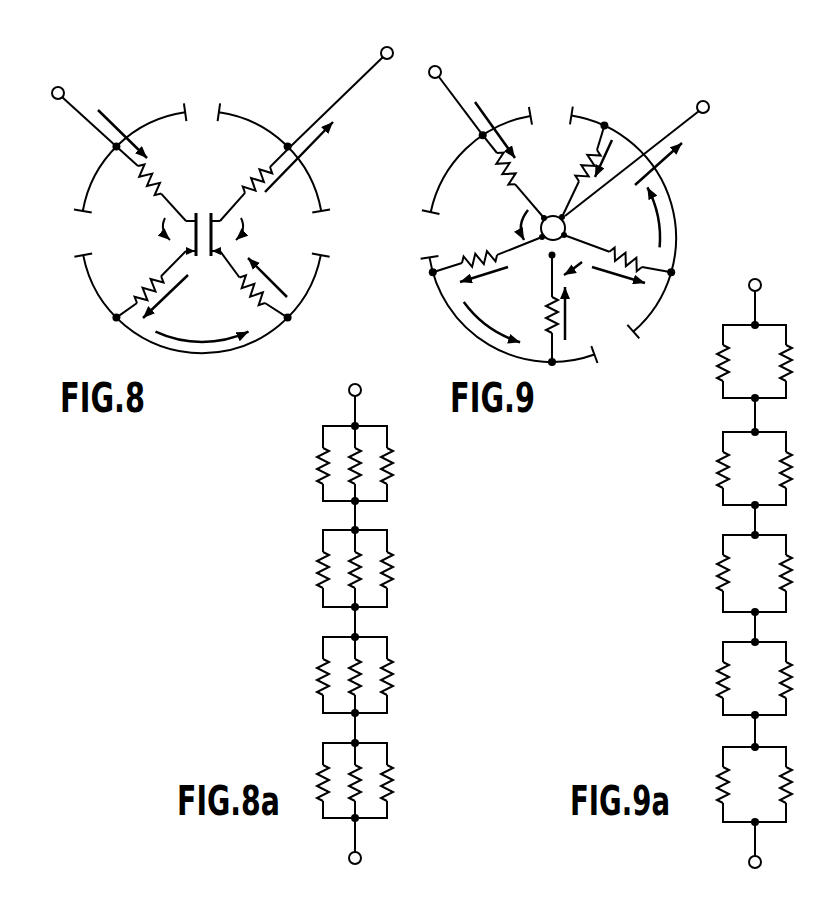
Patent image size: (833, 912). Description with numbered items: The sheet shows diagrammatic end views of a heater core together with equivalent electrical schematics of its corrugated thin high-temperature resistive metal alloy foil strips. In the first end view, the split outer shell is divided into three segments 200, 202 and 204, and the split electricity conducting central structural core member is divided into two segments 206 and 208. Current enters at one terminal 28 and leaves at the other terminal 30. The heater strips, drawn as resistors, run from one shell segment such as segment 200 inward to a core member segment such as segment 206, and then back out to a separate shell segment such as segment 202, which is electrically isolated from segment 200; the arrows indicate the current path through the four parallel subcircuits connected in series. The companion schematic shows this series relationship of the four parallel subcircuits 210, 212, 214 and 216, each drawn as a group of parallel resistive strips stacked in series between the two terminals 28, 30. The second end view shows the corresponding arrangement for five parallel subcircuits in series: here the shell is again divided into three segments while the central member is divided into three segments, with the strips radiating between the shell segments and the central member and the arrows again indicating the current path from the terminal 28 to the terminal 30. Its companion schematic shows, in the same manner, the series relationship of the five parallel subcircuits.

In FIG. 8, the first input terminal 28 is at (83, 110).
In FIG. 9, the first input terminal 28 is at (446, 88).
In FIG. 8, the second input terminal 30 is at (340, 100).
In FIG. 9, the second input terminal 30 is at (689, 128).
In FIG. 8, the shell segment 200 is at (78, 203).
In FIG. 8, the shell segment 202 is at (84, 274).
In FIG. 8, the shell segment 204 is at (315, 180).
In FIG. 8, the core member segment 206 is at (180, 232).
In FIG. 8, the core member segment 208 is at (228, 240).
In FIG. 8A, the parallel subcircuit 210 is at (400, 768).
In FIG. 8A, the parallel subcircuit 212 is at (398, 678).
In FIG. 8A, the parallel subcircuit 214 is at (398, 575).
In FIG. 8A, the parallel subcircuit 216 is at (398, 470).